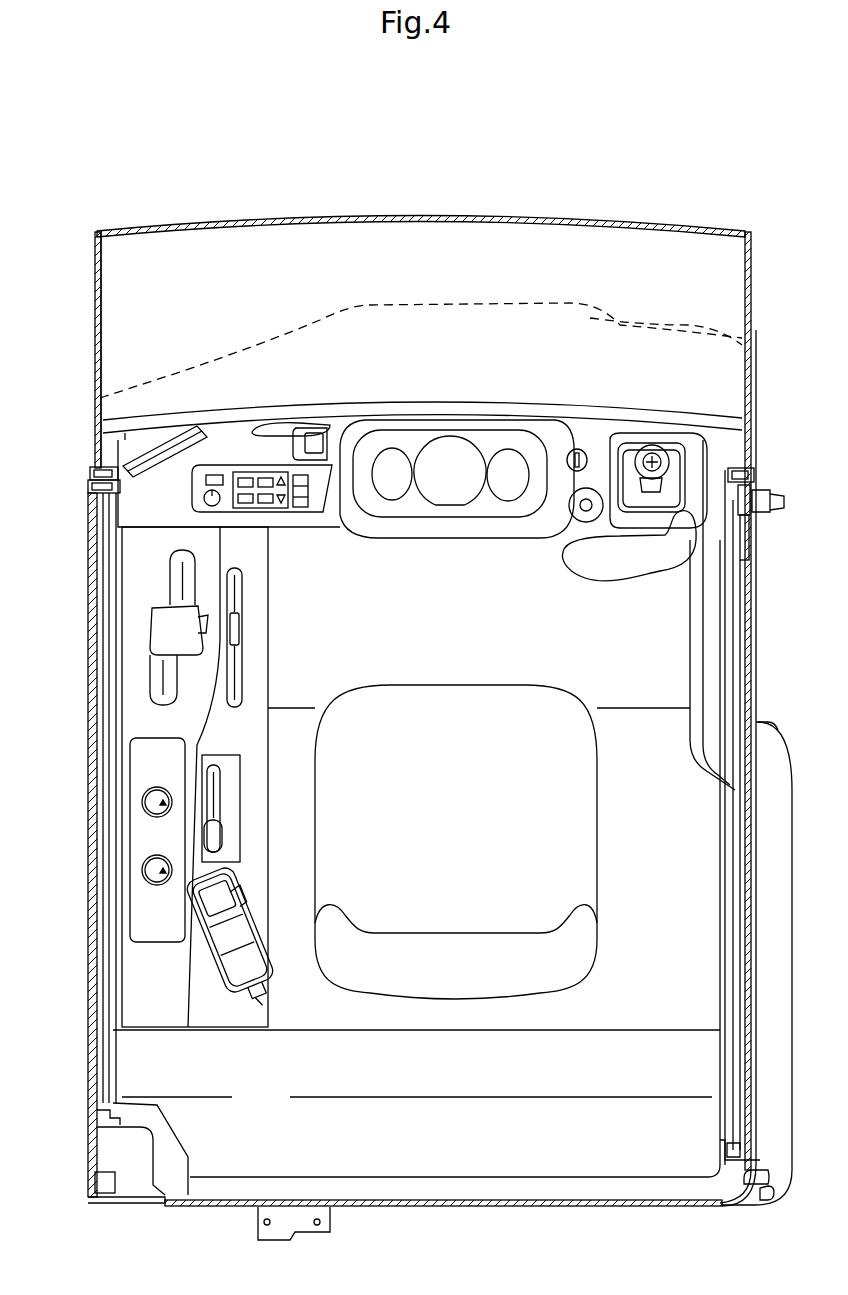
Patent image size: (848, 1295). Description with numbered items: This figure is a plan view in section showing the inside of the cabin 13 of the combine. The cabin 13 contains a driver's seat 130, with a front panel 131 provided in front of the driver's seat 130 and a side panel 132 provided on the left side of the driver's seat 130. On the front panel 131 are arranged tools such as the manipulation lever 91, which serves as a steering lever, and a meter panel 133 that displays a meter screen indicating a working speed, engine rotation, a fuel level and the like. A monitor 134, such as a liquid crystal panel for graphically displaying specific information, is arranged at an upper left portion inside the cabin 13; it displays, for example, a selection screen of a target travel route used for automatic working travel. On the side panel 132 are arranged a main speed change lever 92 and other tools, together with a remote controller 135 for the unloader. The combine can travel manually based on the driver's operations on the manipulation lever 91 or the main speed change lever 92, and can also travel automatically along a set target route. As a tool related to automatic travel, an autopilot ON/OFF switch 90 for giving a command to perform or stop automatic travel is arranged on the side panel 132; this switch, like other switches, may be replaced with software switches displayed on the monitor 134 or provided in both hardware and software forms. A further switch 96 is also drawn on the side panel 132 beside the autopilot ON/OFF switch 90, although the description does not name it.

The cabin 13 is at (252, 203).
The manipulation lever 91 is at (654, 443).
The main speed change lever 92 is at (160, 625).
The switch 96 is at (148, 799).
The autopilot ON/OFF switch 90 is at (150, 870).
The driver's seat 130 is at (506, 695).
The front panel 131 is at (320, 530).
The side panel 132 is at (270, 655).
The meter panel 133 is at (483, 505).
The monitor 134 is at (165, 455).
The remote controller 135 is at (240, 943).